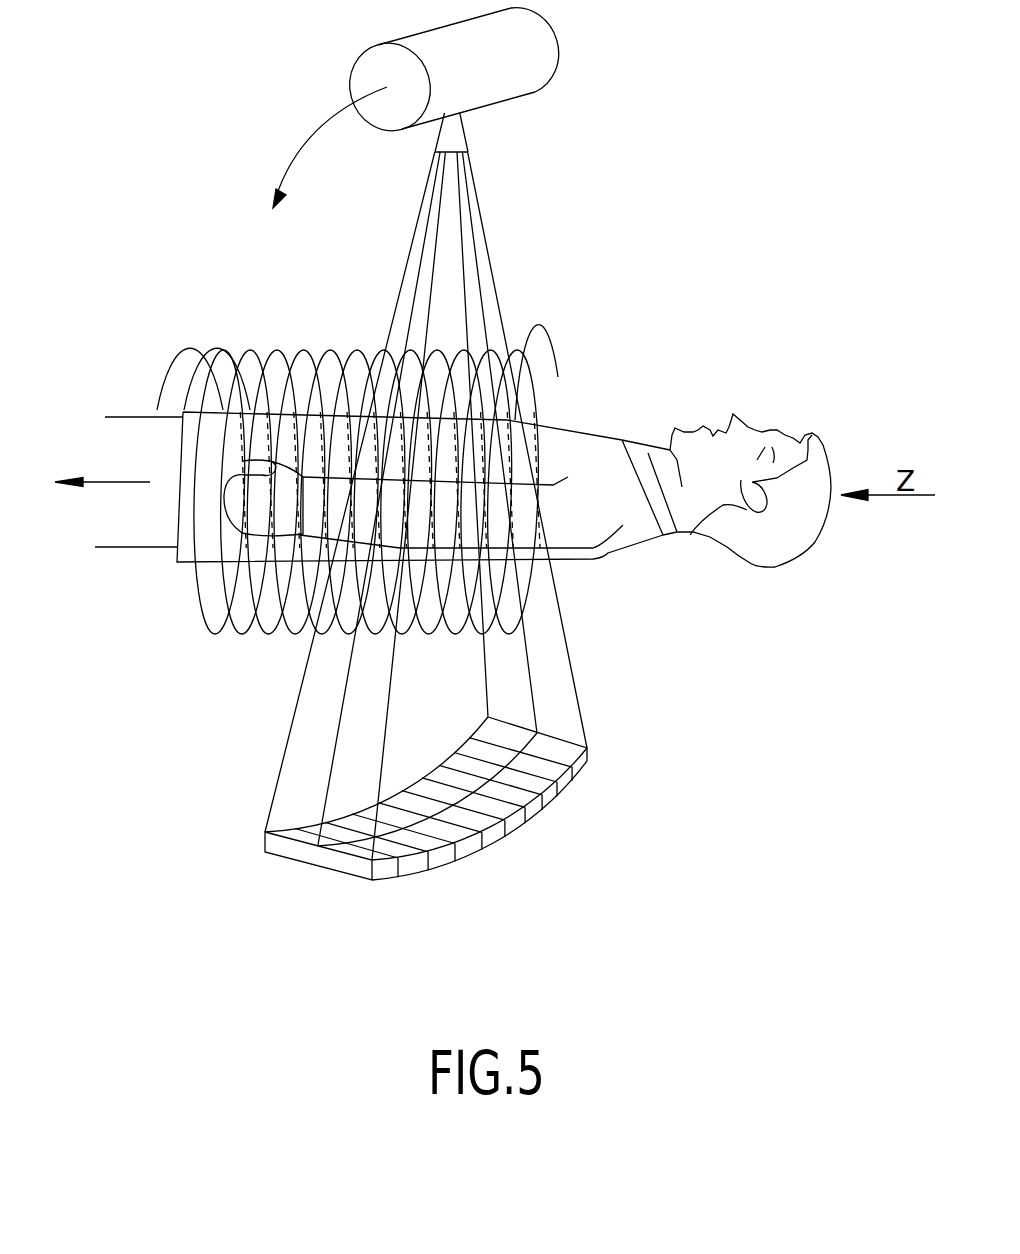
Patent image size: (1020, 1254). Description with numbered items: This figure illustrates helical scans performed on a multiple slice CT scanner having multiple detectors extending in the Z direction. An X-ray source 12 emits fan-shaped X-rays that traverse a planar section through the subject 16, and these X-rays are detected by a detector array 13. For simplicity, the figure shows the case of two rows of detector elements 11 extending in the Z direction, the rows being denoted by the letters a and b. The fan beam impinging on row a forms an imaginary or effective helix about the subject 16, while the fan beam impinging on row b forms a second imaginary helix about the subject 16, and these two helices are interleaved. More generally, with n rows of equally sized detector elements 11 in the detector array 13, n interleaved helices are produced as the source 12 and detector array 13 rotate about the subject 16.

The X-ray source 12 is at (533, 37).
The subject 16 is at (755, 423).
The detector array 13 is at (501, 817).
The detector elements 11 is at (418, 866).